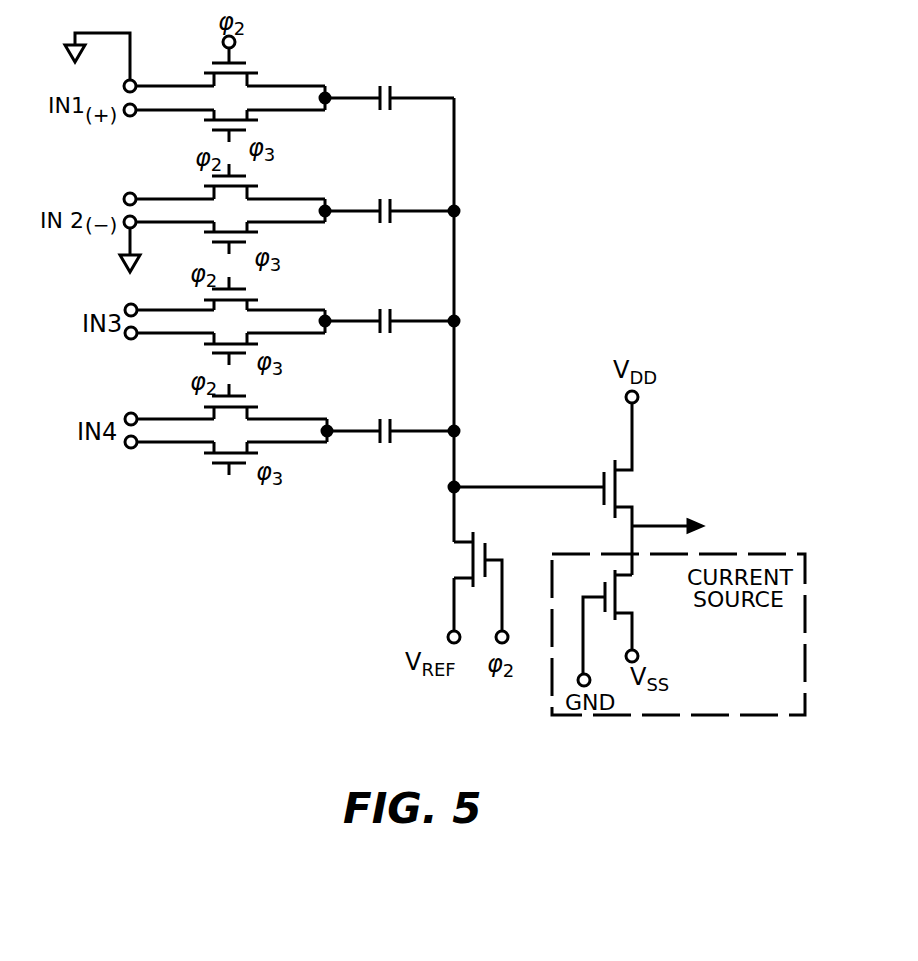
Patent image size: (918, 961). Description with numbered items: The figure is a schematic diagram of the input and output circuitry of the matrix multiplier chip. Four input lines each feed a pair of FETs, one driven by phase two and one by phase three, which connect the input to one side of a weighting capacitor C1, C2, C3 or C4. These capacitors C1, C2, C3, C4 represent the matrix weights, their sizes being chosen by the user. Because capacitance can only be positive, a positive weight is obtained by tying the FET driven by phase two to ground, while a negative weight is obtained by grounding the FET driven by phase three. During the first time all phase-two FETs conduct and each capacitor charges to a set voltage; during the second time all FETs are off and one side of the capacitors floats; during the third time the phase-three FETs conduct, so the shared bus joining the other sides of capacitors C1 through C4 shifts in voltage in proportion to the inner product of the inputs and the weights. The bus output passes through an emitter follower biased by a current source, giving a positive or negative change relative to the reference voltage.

The capacitor C1 is at (414, 82).
The capacitor C2 is at (414, 195).
The capacitor C3 is at (414, 305).
The capacitor C4 is at (414, 415).